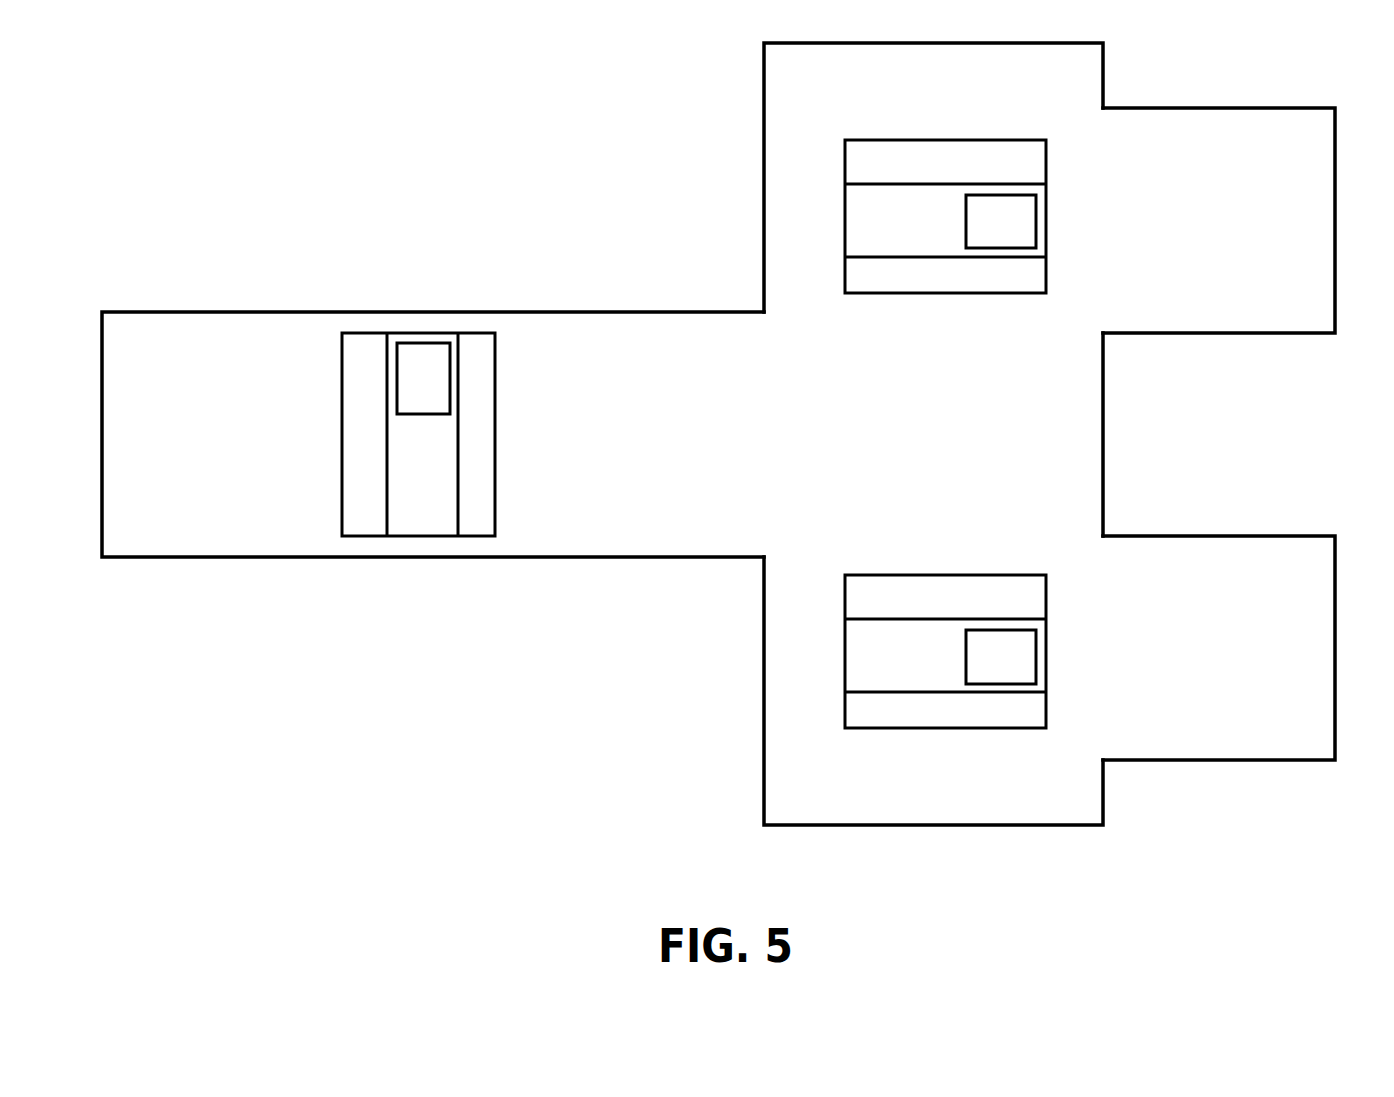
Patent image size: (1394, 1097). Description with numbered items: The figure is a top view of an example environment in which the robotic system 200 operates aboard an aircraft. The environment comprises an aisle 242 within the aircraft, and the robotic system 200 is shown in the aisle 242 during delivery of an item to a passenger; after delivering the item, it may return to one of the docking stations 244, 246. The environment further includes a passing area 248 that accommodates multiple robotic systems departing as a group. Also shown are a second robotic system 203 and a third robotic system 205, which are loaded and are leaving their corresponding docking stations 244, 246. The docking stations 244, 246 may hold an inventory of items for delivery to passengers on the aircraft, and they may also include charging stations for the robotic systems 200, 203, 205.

The robotic system 200 is at (428, 536).
The second robotic system 203 is at (935, 295).
The third robotic system 205 is at (965, 728).
The aisle 242 is at (622, 523).
The docking station 244 is at (1273, 283).
The docking station 246 is at (1273, 716).
The passing area 248 is at (948, 482).